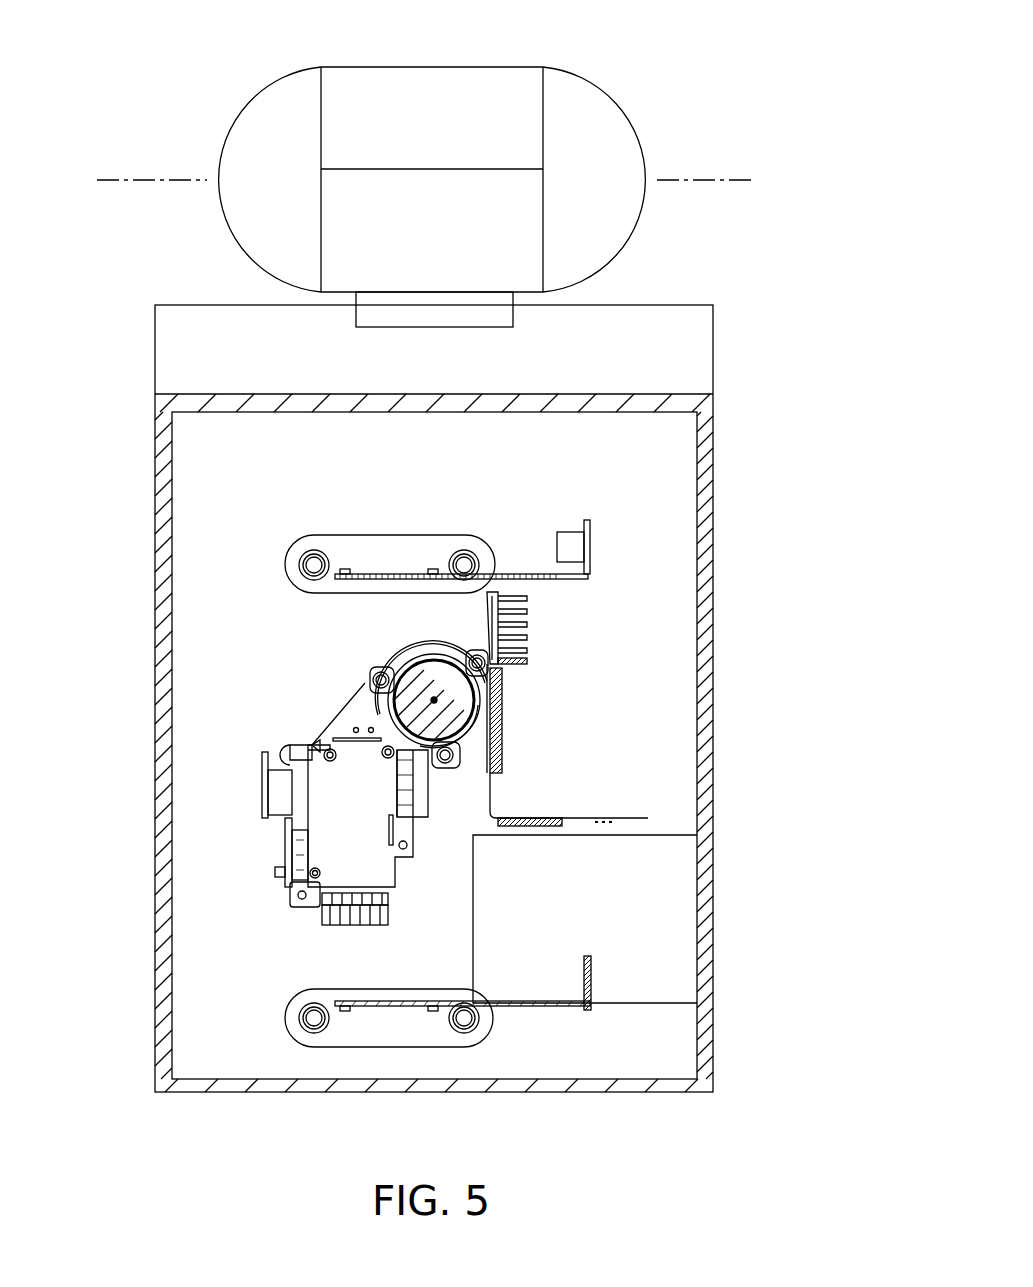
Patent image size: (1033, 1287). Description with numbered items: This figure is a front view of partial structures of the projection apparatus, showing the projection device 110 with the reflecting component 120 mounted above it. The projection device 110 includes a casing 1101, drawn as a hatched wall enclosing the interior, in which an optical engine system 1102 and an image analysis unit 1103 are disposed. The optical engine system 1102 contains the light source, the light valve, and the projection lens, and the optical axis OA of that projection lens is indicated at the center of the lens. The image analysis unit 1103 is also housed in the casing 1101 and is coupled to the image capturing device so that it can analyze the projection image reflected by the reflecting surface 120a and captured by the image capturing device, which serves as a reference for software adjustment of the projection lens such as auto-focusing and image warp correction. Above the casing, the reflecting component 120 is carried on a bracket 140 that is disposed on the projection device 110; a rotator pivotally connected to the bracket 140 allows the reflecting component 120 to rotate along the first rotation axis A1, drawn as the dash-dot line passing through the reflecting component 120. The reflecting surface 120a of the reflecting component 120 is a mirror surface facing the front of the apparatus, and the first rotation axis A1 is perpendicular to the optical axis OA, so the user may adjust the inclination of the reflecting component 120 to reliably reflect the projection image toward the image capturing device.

The reflecting component 120 is at (607, 114).
The reflecting surface 120a is at (490, 100).
The first rotation axis A1 is at (733, 176).
The bracket 140 is at (476, 315).
The projection device 110 is at (728, 593).
The casing 1101 is at (707, 470).
The optical engine system 1102 is at (265, 903).
The image analysis unit 1103 is at (667, 925).
The optical axis OA is at (434, 700).